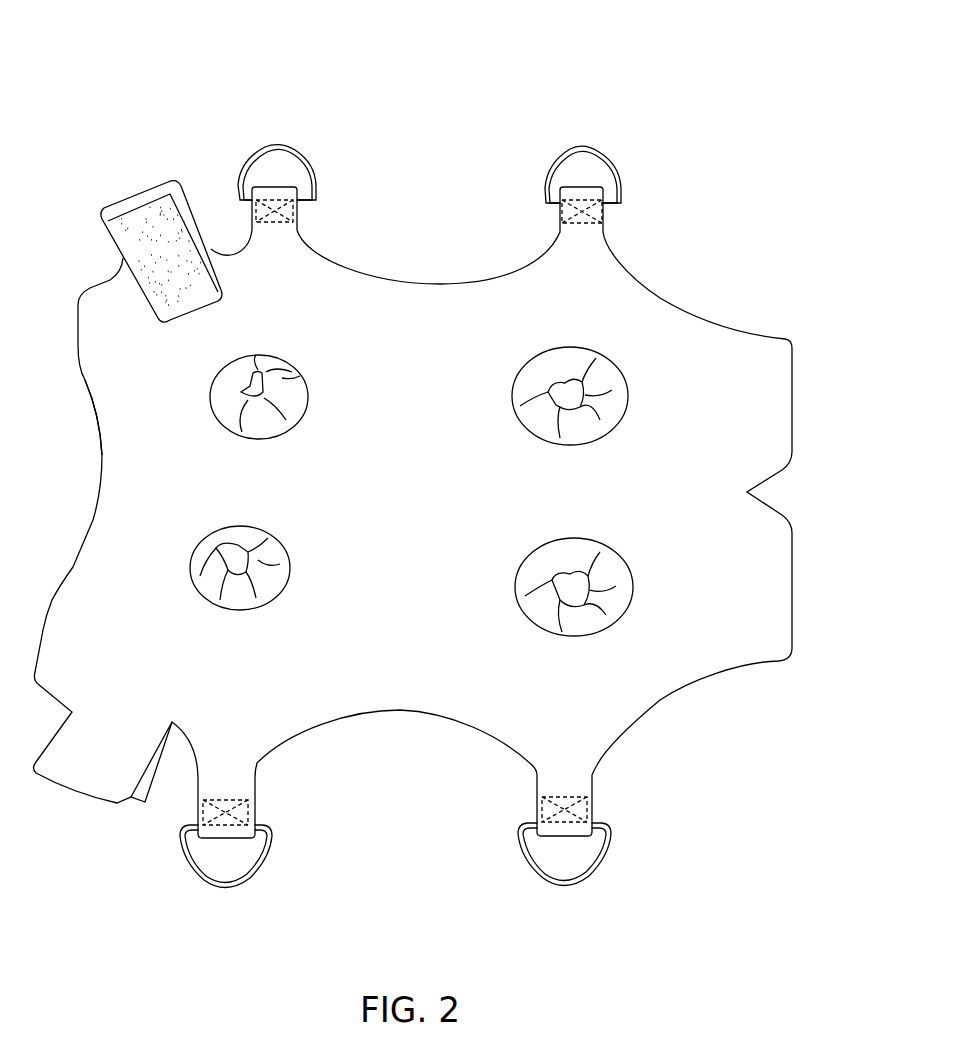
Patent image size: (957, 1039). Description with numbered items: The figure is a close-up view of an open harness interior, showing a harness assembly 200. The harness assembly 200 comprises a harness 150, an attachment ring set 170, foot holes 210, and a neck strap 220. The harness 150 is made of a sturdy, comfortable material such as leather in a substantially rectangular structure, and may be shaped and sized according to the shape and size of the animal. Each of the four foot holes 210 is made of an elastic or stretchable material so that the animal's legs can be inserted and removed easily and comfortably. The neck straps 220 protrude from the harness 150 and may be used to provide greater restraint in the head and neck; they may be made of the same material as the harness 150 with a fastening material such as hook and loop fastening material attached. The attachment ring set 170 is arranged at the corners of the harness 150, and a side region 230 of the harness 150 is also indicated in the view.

The harness 150 is at (782, 372).
The attachment ring set 170 is at (290, 142).
The harness assembly 200 is at (461, 516).
The foot holes 210 is at (560, 360).
The neck strap 220 is at (172, 198).
The side edge of sling body 230 is at (101, 545).